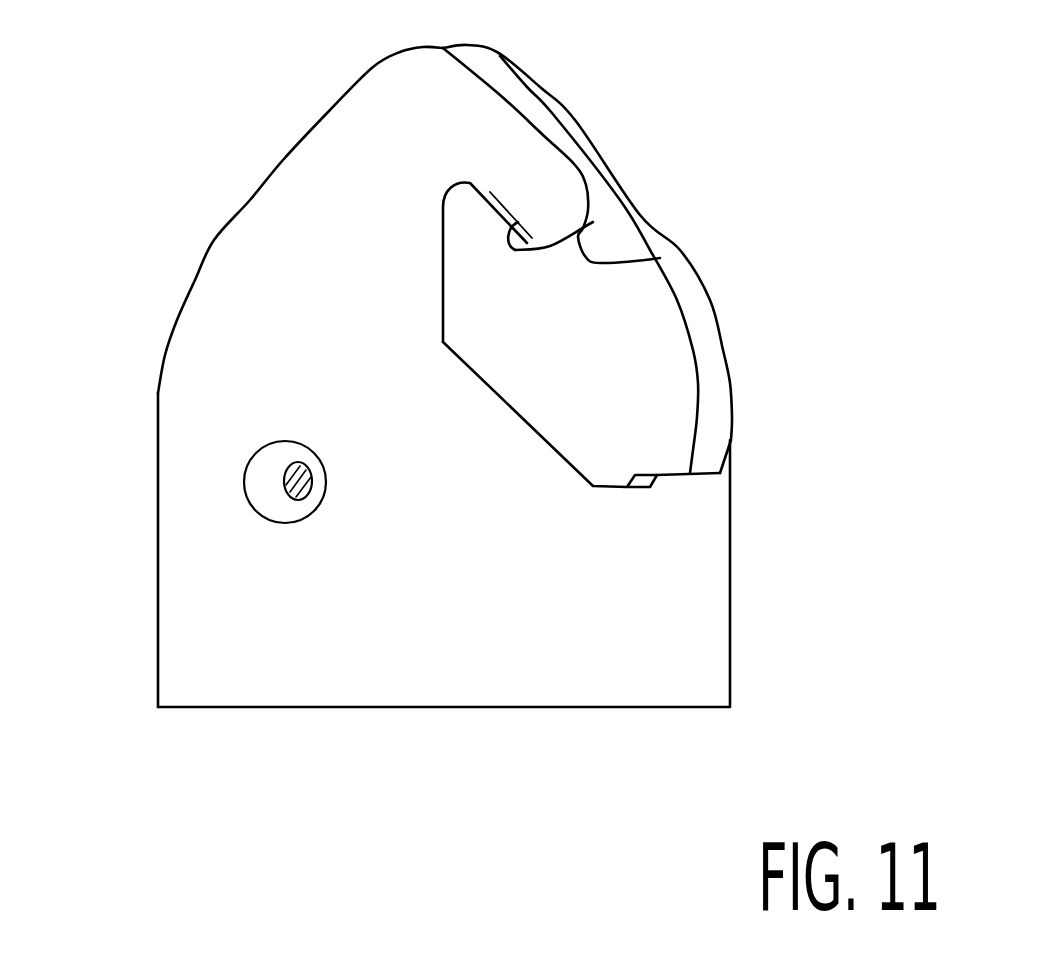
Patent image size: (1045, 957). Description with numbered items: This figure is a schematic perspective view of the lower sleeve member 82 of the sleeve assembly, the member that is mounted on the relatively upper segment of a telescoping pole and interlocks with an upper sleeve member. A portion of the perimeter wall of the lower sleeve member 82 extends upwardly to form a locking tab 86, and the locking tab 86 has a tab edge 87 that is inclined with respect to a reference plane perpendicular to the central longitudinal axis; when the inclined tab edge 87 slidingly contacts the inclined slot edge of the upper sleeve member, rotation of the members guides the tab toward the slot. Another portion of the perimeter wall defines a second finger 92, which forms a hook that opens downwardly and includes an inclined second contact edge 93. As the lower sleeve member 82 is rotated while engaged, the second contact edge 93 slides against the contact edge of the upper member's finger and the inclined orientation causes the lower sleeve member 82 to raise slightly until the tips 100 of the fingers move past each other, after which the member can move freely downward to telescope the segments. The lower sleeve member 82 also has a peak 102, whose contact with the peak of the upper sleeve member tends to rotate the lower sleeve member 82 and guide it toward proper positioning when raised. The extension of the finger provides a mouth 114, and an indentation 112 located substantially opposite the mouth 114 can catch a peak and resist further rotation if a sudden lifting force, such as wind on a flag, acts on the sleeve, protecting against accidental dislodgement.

The lower sleeve member 82 is at (225, 652).
The locking tab 86 is at (265, 252).
The tab edge 87 is at (283, 160).
The second finger 92 is at (540, 178).
The second contact edge 93 is at (593, 222).
The tip of finger 100 is at (727, 255).
The peak 102 is at (430, 48).
The indentation 112 is at (780, 533).
The mouth 114 is at (547, 360).